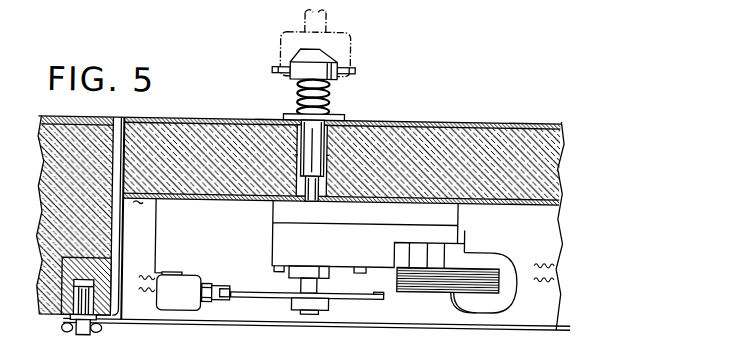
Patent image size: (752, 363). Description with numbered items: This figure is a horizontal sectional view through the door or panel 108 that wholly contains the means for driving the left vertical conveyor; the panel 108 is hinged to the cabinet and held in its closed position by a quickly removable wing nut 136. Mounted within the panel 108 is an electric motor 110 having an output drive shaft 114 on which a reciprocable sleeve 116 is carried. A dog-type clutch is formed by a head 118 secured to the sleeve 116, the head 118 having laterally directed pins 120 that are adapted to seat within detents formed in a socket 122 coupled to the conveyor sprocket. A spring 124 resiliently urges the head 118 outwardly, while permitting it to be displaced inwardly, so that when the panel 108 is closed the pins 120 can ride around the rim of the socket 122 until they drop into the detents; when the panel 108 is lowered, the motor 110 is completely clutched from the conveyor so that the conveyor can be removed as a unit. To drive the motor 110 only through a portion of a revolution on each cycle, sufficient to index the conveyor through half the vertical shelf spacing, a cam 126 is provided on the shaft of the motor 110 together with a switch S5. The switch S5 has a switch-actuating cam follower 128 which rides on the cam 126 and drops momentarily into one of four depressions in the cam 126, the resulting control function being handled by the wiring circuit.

The door or panel 108 is at (411, 121).
The electric motor 110 is at (273, 233).
The output drive shaft 114 is at (323, 197).
The reciprocable sleeve 116 is at (329, 92).
The head 118 is at (331, 60).
The laterally directed pins 120 is at (354, 70).
The socket 122 is at (278, 43).
The spring 124 is at (297, 100).
The cam 126 is at (360, 301).
The switch-actuating cam follower 128 is at (238, 304).
The wing nut 136 is at (77, 334).
The switch S5 is at (190, 313).